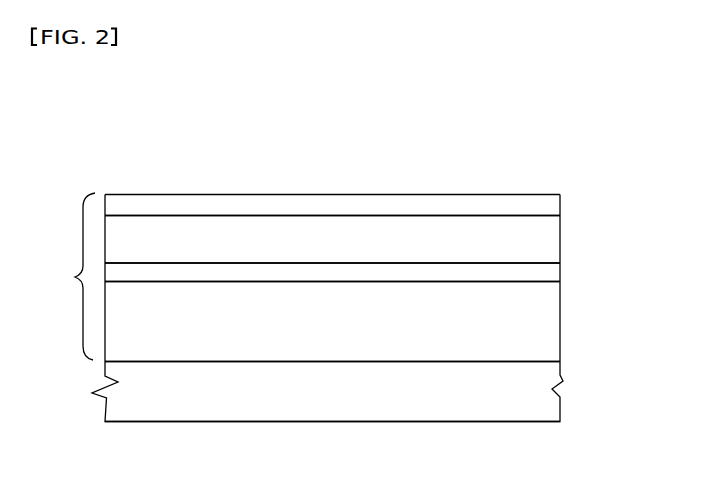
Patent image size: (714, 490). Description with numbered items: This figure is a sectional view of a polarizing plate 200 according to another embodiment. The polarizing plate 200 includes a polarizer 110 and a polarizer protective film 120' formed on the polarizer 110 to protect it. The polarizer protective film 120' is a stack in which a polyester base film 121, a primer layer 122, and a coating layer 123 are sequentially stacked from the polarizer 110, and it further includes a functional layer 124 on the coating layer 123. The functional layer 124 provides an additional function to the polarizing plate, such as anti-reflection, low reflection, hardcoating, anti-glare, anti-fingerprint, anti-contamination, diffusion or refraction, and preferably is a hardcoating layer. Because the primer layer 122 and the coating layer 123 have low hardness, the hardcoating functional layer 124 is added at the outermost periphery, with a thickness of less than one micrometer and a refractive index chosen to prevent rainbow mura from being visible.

The polarizing plate 200 is at (572, 144).
The polarizer 110 is at (538, 390).
The polarizer protective film 120' is at (58, 276).
The polyester base film 121 is at (538, 337).
The primer layer 122 is at (538, 276).
The coating layer 123 is at (538, 238).
The functional layer 124 is at (538, 206).